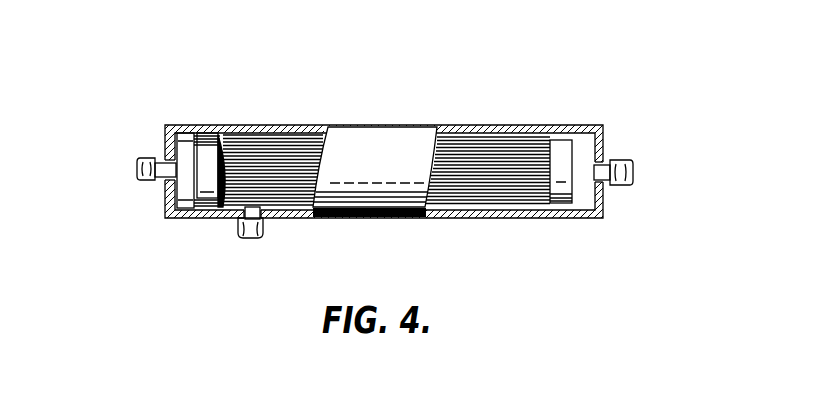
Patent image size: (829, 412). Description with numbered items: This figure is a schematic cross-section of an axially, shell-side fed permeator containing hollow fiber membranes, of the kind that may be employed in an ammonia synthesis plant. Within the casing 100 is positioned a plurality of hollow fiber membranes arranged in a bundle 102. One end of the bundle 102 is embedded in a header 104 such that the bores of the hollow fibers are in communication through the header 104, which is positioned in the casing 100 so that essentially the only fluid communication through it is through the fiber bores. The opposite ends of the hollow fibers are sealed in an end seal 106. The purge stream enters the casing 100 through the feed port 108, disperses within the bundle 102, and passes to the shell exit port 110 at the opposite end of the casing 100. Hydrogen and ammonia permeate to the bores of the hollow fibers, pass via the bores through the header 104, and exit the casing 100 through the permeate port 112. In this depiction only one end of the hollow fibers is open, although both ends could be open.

The casing 100 is at (348, 137).
The bundle 102 is at (462, 152).
The header 104 is at (207, 147).
The end seal 106 is at (561, 150).
The feed port 108 is at (262, 230).
The shell exit port 110 is at (620, 163).
The permeate port 112 is at (146, 152).